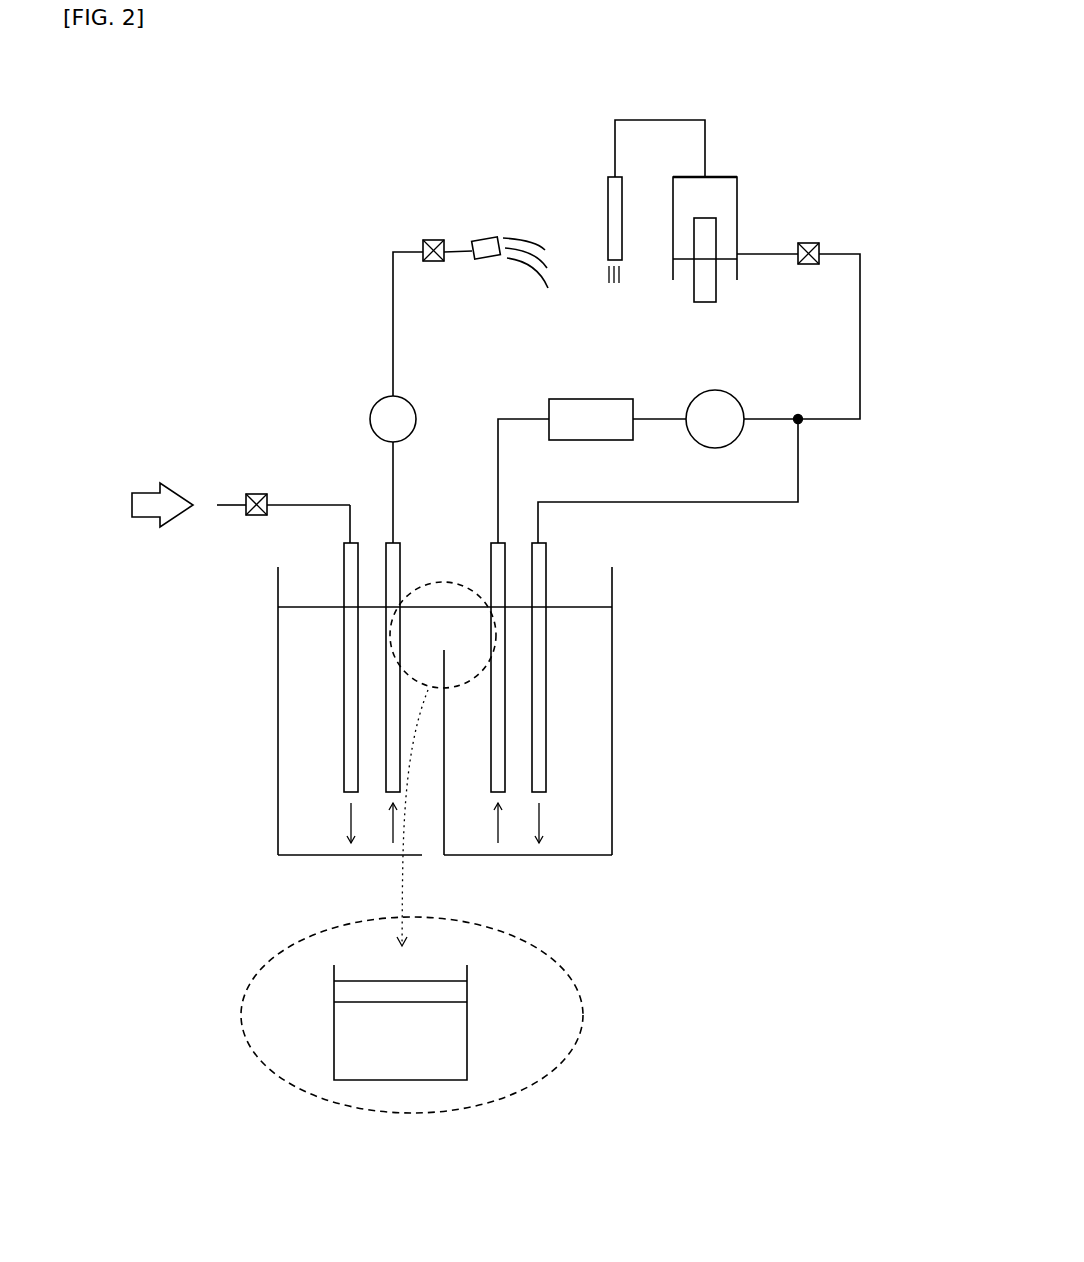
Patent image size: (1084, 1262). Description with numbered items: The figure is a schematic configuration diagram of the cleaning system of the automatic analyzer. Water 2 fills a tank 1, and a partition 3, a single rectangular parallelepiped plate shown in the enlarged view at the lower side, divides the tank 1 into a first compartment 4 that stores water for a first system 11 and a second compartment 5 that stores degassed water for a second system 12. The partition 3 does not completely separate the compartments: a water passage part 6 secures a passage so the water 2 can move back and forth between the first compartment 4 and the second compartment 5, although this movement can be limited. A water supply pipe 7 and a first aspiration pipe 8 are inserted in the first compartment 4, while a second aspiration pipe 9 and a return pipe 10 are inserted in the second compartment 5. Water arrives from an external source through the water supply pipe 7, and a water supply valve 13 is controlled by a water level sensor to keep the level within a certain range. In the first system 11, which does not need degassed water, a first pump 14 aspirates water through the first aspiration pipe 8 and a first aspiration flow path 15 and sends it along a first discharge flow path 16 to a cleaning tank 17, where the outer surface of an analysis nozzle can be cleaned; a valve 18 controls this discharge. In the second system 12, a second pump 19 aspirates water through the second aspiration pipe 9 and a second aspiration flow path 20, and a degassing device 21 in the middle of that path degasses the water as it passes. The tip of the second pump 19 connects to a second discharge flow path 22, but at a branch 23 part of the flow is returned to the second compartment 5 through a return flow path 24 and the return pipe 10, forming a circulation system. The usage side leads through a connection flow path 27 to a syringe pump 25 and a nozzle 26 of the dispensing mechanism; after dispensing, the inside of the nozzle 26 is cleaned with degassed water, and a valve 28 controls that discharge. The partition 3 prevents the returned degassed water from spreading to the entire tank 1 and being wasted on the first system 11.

The tank 1 is at (277, 802).
The water 2 is at (328, 607).
The partition 3 is at (447, 835).
The first compartment 4 is at (310, 837).
The second compartment 5 is at (587, 832).
The water passage part 6 is at (445, 627).
The water supply pipe 7 is at (345, 762).
The first aspiration pipe 8 is at (385, 710).
The second aspiration pipe 9 is at (507, 707).
The return pipe 10 is at (548, 755).
The first system 11 is at (232, 255).
The second system 12 is at (826, 613).
The water supply valve 13 is at (257, 493).
The first pump 14 is at (372, 402).
The first aspiration flow path 15 is at (393, 490).
The first discharge flow path 16 is at (393, 333).
The cleaning tank 17 is at (483, 238).
The valve 18 is at (435, 240).
The second pump 19 is at (715, 392).
The second aspiration flow path 20 is at (513, 420).
The degassing device 21 is at (592, 442).
The second discharge flow path 22 is at (858, 336).
The branch 23 is at (802, 427).
The return flow path 24 is at (717, 503).
The syringe pump 25 is at (737, 213).
The nozzle 26 is at (605, 220).
The connection flow path 27 is at (660, 120).
The valve 28 is at (812, 242).